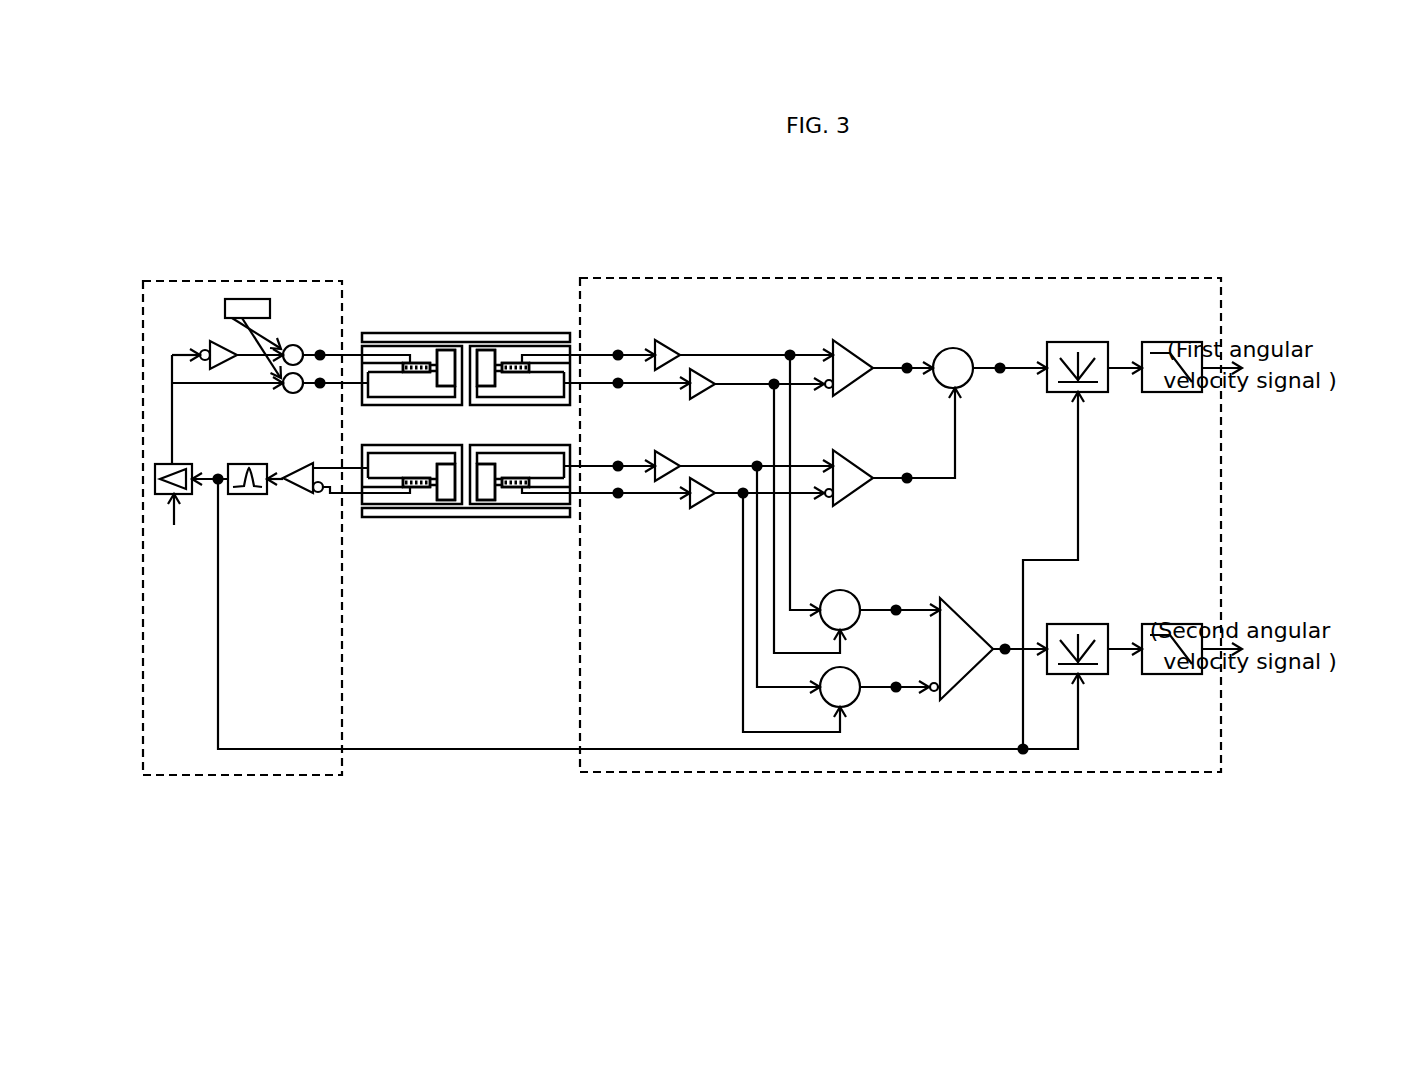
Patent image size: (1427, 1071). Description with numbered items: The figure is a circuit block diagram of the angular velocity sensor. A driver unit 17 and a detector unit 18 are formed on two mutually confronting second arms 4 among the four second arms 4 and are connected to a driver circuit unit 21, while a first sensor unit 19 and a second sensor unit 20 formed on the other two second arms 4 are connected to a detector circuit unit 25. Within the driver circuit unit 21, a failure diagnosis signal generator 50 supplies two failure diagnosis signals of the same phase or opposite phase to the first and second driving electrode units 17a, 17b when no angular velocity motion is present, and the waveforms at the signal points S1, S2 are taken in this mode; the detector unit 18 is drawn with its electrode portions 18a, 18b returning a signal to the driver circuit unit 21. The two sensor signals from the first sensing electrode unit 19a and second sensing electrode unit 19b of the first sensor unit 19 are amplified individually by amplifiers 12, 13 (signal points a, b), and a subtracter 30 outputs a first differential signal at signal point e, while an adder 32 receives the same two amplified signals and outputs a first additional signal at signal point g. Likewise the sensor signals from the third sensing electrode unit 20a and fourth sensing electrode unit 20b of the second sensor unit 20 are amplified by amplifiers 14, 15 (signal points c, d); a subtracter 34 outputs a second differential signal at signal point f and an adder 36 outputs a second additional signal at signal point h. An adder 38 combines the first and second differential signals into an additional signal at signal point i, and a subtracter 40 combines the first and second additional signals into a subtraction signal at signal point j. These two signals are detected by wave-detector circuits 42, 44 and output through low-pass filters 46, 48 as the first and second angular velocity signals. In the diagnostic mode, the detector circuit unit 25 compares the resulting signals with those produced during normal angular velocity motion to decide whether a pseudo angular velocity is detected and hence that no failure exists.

The second arms 4 is at (400, 445).
The amplifier 12 is at (668, 345).
The amplifier 13 is at (705, 394).
The amplifier 14 is at (667, 453).
The amplifier 15 is at (705, 510).
The driver unit 17 is at (455, 280).
The first driving electrode unit 17a is at (403, 363).
The second driving electrode unit 17b is at (420, 363).
The detector unit 18 is at (455, 585).
The detection electrode 18a is at (410, 487).
The detection electrode 18b is at (420, 487).
The first sensor unit 19 is at (565, 280).
The first sensing electrode unit 19a is at (520, 363).
The second sensing electrode unit 19b is at (505, 363).
The second sensor unit 20 is at (565, 585).
The third sensing electrode unit 20a is at (522, 487).
The fourth sensing electrode unit 20b is at (512, 487).
The driver circuit unit 21 is at (290, 281).
The detector circuit unit 25 is at (648, 278).
The subtracter 30 is at (848, 348).
The adder 32 is at (840, 590).
The subtracter 34 is at (848, 458).
The adder 36 is at (855, 672).
The adder 38 is at (953, 348).
The subtracter 40 is at (953, 603).
The wave-detector circuit 42 is at (1075, 342).
The wave-detector circuit 44 is at (1077, 624).
The low-pass filter 46 is at (1170, 342).
The low-pass filter 48 is at (1172, 624).
The failure diagnosis signal generator 50 is at (238, 299).
The signal point S1 is at (320, 350).
The signal point S2 is at (320, 388).
The signal point a is at (617, 350).
The signal point b is at (619, 389).
The signal point c is at (616, 461).
The signal point d is at (619, 499).
The signal point e is at (907, 362).
The signal point f is at (907, 472).
The signal point g is at (896, 604).
The signal point h is at (897, 681).
The signal point i is at (1000, 362).
The signal point j is at (1005, 642).